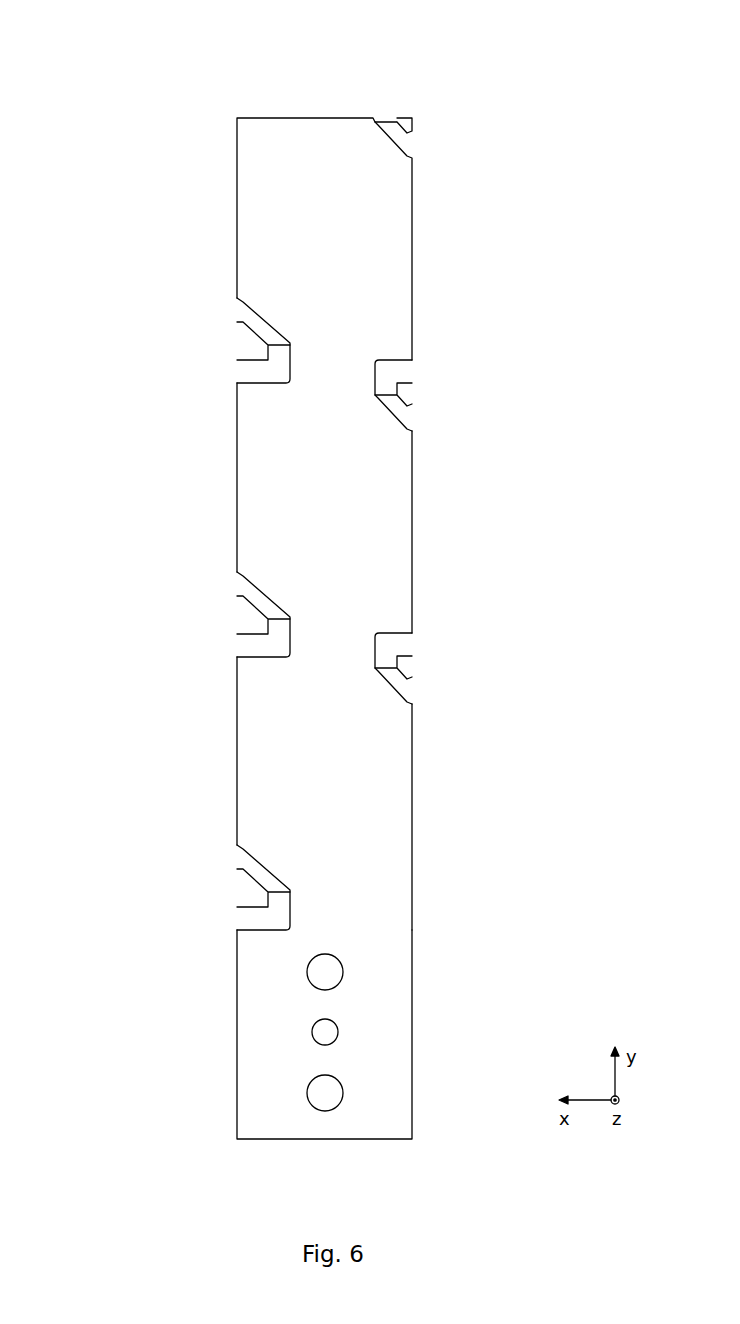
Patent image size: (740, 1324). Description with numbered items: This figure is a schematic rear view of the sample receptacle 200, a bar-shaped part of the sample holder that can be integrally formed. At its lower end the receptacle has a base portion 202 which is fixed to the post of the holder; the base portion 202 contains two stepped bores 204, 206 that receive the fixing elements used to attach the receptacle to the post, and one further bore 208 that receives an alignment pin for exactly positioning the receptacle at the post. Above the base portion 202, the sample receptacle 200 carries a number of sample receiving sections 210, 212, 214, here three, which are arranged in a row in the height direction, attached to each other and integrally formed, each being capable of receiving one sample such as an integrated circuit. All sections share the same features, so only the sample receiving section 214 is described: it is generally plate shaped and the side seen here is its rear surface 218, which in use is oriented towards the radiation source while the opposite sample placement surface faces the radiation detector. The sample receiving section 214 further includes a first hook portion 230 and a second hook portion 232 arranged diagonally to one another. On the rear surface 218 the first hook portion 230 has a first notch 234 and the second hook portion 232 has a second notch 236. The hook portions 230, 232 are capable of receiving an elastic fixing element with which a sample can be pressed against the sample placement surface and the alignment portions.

The sample receptacle 200 is at (285, 78).
The base portion 202 is at (237, 1070).
The stepped bore 204 is at (307, 968).
The stepped bore 206 is at (307, 1092).
The bore 208 is at (312, 1028).
The sample receiving section 210 is at (412, 291).
The sample receiving section 212 is at (412, 509).
The sample receiving section 214 is at (412, 780).
The rear surface 218 is at (270, 760).
The first hook portion 230 is at (412, 662).
The second hook portion 232 is at (237, 897).
The first notch 234 is at (388, 688).
The second notch 236 is at (266, 866).